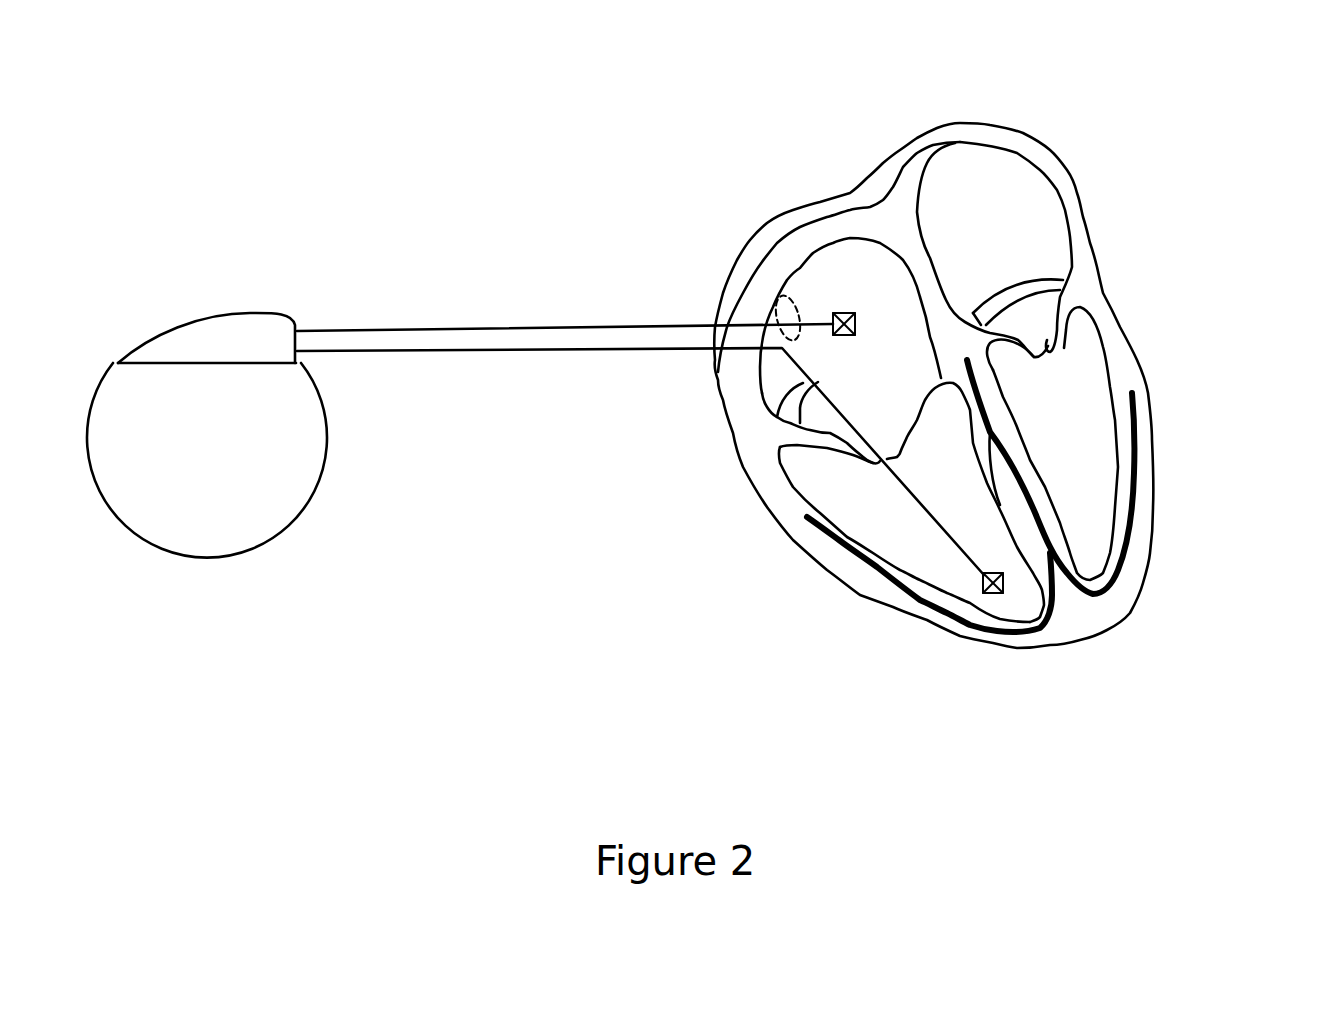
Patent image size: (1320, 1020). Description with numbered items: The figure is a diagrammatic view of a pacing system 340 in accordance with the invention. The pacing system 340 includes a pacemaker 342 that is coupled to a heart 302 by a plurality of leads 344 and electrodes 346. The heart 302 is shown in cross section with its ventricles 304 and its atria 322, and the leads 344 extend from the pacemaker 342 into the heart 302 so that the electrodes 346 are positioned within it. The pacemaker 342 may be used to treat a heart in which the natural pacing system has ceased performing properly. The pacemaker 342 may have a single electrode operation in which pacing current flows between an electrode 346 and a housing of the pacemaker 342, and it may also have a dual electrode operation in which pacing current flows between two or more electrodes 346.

The heart 302 is at (1138, 680).
The ventricles 304 is at (1163, 310).
The atria 322 is at (1120, 219).
The pacing system 340 is at (497, 555).
The pacemaker 342 is at (243, 550).
The leads 344 is at (484, 331).
The electrodes 346 is at (848, 313).